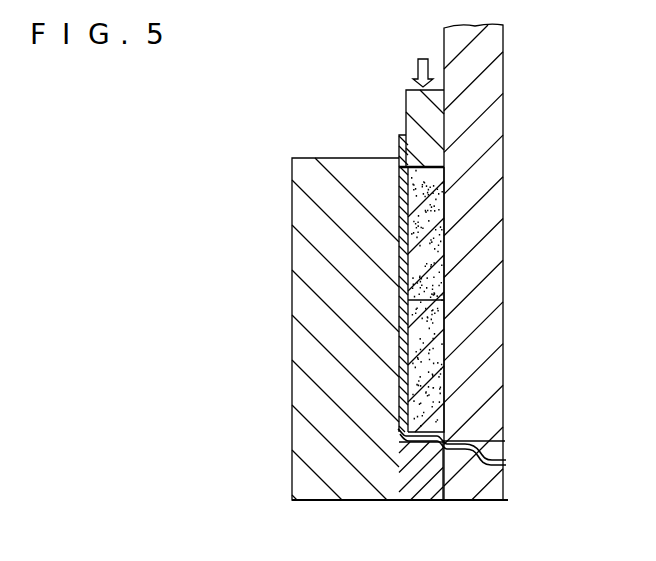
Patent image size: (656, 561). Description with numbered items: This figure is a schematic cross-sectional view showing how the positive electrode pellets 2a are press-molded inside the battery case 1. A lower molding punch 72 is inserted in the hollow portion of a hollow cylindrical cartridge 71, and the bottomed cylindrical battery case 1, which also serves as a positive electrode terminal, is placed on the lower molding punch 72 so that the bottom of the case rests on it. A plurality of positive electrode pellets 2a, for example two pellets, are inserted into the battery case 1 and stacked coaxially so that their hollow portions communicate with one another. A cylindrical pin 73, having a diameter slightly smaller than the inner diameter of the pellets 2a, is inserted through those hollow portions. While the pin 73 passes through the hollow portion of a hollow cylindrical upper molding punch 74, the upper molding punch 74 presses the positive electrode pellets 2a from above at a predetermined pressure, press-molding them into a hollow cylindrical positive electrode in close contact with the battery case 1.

The hollow cylindrical cartridge 71 is at (312, 178).
The pin 73 is at (488, 80).
The upper molding punch 74 is at (417, 118).
The positive electrode pellets 2a is at (400, 281).
The battery case 1 is at (410, 215).
The lower molding punch 72 is at (428, 482).